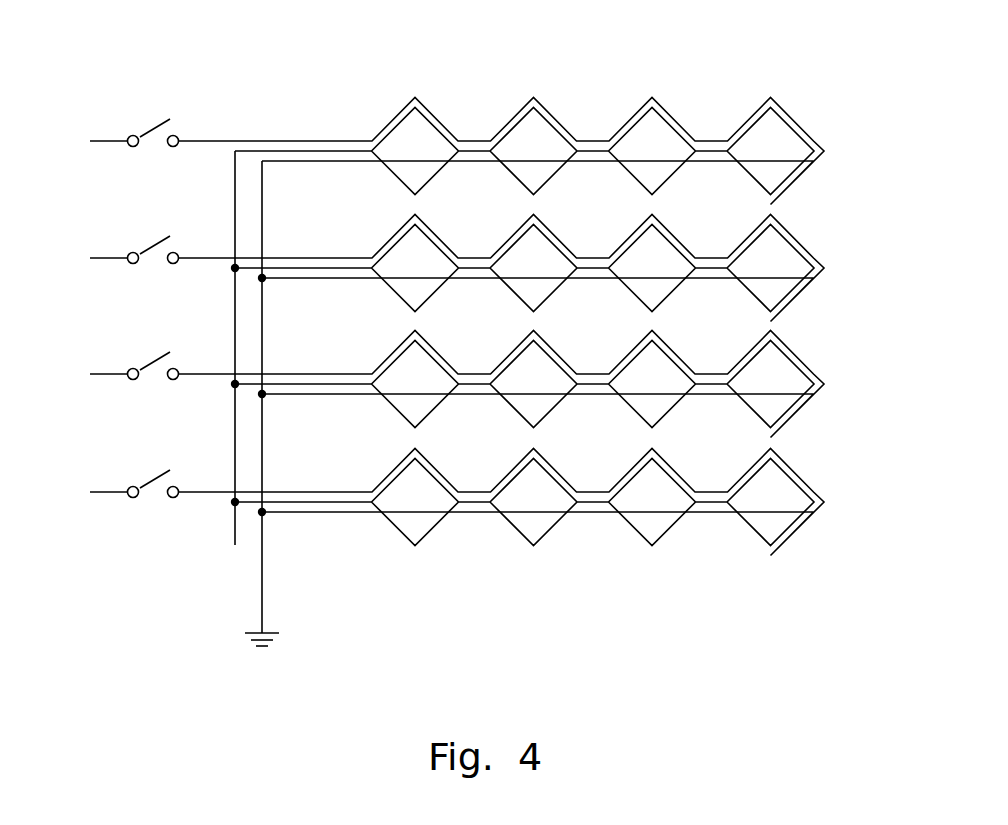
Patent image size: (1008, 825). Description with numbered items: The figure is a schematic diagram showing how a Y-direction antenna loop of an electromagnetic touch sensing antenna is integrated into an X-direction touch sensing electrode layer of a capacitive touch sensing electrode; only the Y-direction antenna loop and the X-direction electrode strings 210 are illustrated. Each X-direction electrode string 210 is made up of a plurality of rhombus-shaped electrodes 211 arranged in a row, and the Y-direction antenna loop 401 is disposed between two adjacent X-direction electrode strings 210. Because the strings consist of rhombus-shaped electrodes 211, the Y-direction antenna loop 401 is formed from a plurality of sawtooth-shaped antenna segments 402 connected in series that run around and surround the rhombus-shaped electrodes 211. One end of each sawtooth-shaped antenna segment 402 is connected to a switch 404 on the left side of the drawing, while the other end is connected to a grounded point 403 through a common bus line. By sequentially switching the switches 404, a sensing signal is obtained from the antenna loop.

The Y-direction antenna loop 401 is at (223, 126).
The sawtooth-shaped antenna segment 402 is at (390, 122).
The grounded point 403 is at (260, 583).
The switch 404 is at (150, 119).
The X-direction electrode string 210 is at (813, 138).
The rhombus-shaped electrode 211 is at (527, 138).